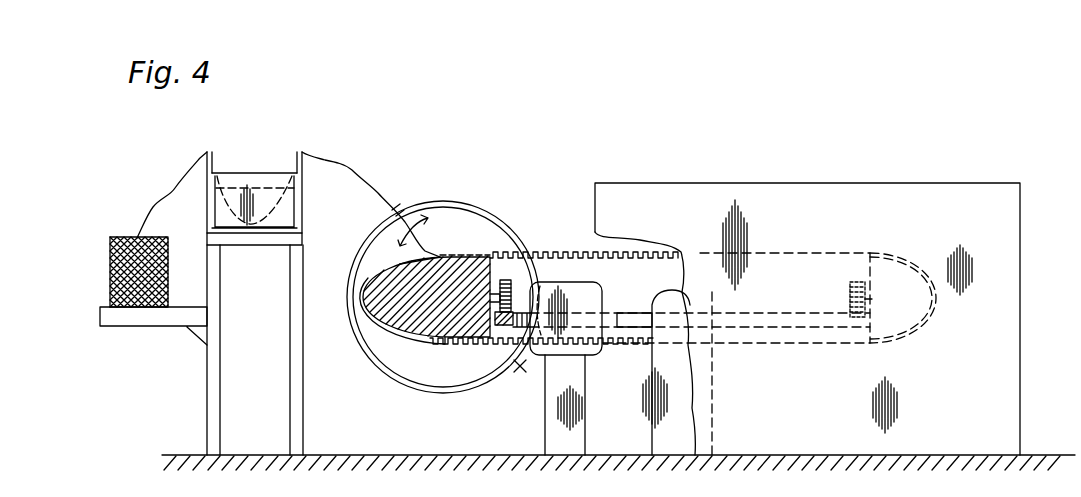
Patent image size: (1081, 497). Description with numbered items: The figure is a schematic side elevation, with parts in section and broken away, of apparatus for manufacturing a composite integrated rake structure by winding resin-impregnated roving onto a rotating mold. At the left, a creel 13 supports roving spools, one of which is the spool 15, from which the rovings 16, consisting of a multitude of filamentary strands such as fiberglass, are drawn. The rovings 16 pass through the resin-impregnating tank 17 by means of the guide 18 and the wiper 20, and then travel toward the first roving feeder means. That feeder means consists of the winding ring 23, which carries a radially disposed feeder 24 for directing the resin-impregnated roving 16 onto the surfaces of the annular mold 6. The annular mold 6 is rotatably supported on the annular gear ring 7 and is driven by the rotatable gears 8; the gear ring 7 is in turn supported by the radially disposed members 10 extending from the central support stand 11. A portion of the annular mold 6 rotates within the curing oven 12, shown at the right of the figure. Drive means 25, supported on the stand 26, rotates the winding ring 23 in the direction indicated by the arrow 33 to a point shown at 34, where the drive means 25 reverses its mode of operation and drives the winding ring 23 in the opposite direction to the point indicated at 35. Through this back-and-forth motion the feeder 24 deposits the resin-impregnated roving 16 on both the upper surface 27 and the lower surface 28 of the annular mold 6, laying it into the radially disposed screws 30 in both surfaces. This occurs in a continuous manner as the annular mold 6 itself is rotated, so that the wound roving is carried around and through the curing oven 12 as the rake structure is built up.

The annular mold 6 is at (420, 413).
The annular gear ring 7 is at (503, 338).
The rotatable gears 8 is at (512, 288).
The radially disposed members 10 is at (638, 330).
The central support stand 11 is at (665, 436).
The curing oven 12 is at (852, 400).
The creel 13 is at (165, 320).
The roving spool 15 is at (115, 273).
The rovings 16 is at (168, 192).
The resin-impregnating tank 17 is at (253, 176).
The guide 18 is at (206, 150).
The wiper 20 is at (304, 152).
The winding ring 23 is at (402, 388).
The radially disposed feeder 24 is at (406, 206).
The drive means 25 is at (592, 301).
The stand 26 is at (548, 436).
The upper surface 27 is at (466, 253).
The lower surface 28 is at (391, 334).
The radially disposed screws 30 is at (365, 285).
The arrow 33 is at (400, 246).
The reversal point 34 is at (513, 227).
The reversal point 35 is at (521, 375).